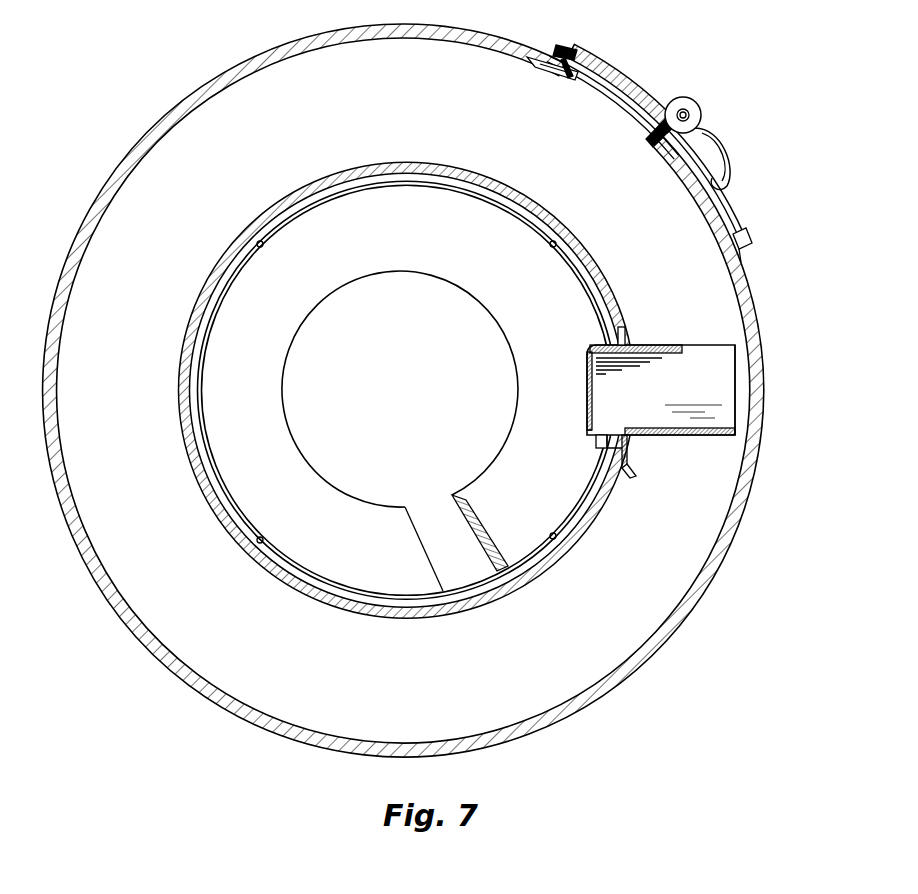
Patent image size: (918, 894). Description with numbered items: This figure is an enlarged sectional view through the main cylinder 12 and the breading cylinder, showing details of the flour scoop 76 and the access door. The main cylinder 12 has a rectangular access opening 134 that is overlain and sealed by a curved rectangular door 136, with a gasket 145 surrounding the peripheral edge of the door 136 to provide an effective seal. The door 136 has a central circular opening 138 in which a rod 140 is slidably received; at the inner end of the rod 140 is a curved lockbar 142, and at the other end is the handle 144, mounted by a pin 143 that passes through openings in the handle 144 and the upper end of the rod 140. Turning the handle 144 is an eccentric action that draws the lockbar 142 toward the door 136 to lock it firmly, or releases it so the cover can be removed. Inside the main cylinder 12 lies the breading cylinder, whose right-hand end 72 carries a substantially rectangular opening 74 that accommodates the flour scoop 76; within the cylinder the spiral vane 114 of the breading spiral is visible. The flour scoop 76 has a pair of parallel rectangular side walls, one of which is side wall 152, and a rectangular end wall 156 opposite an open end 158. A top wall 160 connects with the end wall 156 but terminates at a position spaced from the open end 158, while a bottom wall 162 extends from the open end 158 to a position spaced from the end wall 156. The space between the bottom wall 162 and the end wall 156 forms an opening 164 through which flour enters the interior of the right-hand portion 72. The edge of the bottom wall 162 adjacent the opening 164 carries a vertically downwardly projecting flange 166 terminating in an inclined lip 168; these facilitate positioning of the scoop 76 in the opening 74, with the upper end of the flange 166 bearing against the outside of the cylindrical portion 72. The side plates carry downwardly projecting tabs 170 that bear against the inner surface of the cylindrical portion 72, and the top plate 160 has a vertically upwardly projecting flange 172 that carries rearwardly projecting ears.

The main cylinder 12 is at (638, 665).
The right-hand end of the breading cylinder 72 is at (285, 206).
The rectangular opening 74 is at (609, 434).
The flour scoop 76 is at (651, 345).
The spiral vane 114 is at (363, 547).
The rectangular access opening 134 is at (574, 74).
The curved rectangular door 136 is at (618, 74).
The central circular opening 138 is at (662, 100).
The rod 140 is at (665, 150).
The curved lockbar 142 is at (607, 106).
The pin 143 is at (690, 107).
The handle 144 is at (706, 118).
The gasket 145 is at (571, 48).
The side wall 152 is at (668, 402).
The end wall 156 is at (585, 396).
The open end 158 is at (737, 396).
The top wall 160 is at (672, 345).
The bottom wall 162 is at (684, 437).
The opening 164 is at (589, 432).
The downwardly projecting flange 166 is at (637, 469).
The inclined lip 168 is at (630, 478).
The downwardly projecting tab 170 is at (597, 447).
The upwardly projecting flange 172 is at (623, 328).